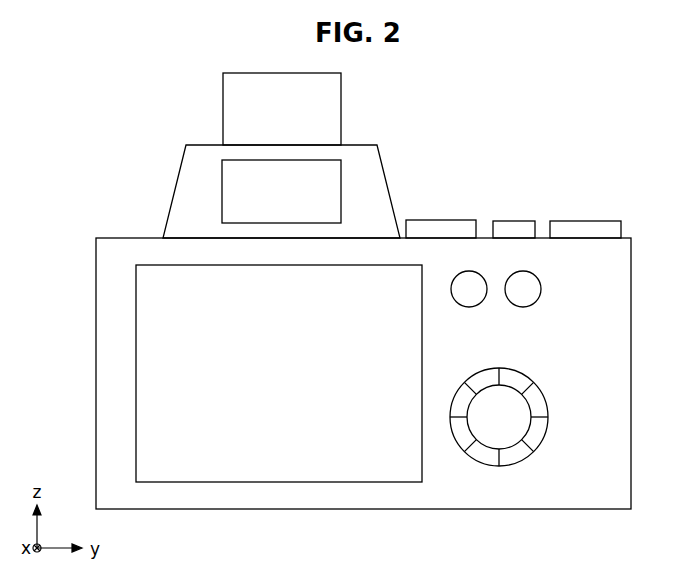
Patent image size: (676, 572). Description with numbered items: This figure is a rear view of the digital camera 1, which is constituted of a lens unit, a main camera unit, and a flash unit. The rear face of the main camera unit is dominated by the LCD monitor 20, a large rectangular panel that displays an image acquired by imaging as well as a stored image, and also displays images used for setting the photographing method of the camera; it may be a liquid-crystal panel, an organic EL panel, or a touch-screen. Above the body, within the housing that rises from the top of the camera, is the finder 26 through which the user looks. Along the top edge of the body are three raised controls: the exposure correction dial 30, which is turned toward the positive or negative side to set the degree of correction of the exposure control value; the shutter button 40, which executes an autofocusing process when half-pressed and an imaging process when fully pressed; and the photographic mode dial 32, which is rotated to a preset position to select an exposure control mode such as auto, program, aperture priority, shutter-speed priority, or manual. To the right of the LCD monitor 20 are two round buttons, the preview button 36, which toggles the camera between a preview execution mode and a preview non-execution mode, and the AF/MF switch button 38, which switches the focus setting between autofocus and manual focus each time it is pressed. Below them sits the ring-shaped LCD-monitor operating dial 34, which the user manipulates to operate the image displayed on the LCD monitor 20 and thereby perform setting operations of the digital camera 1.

The digital camera 1 is at (562, 100).
The LCD monitor 20 is at (282, 483).
The finder 26 is at (213, 190).
The exposure correction dial 30 is at (439, 219).
The photographic mode dial 32 is at (583, 220).
The LCD-monitor operating dial 34 is at (499, 466).
The preview button 36 is at (469, 308).
The AF/MF switch button 38 is at (523, 308).
The shutter button 40 is at (511, 220).